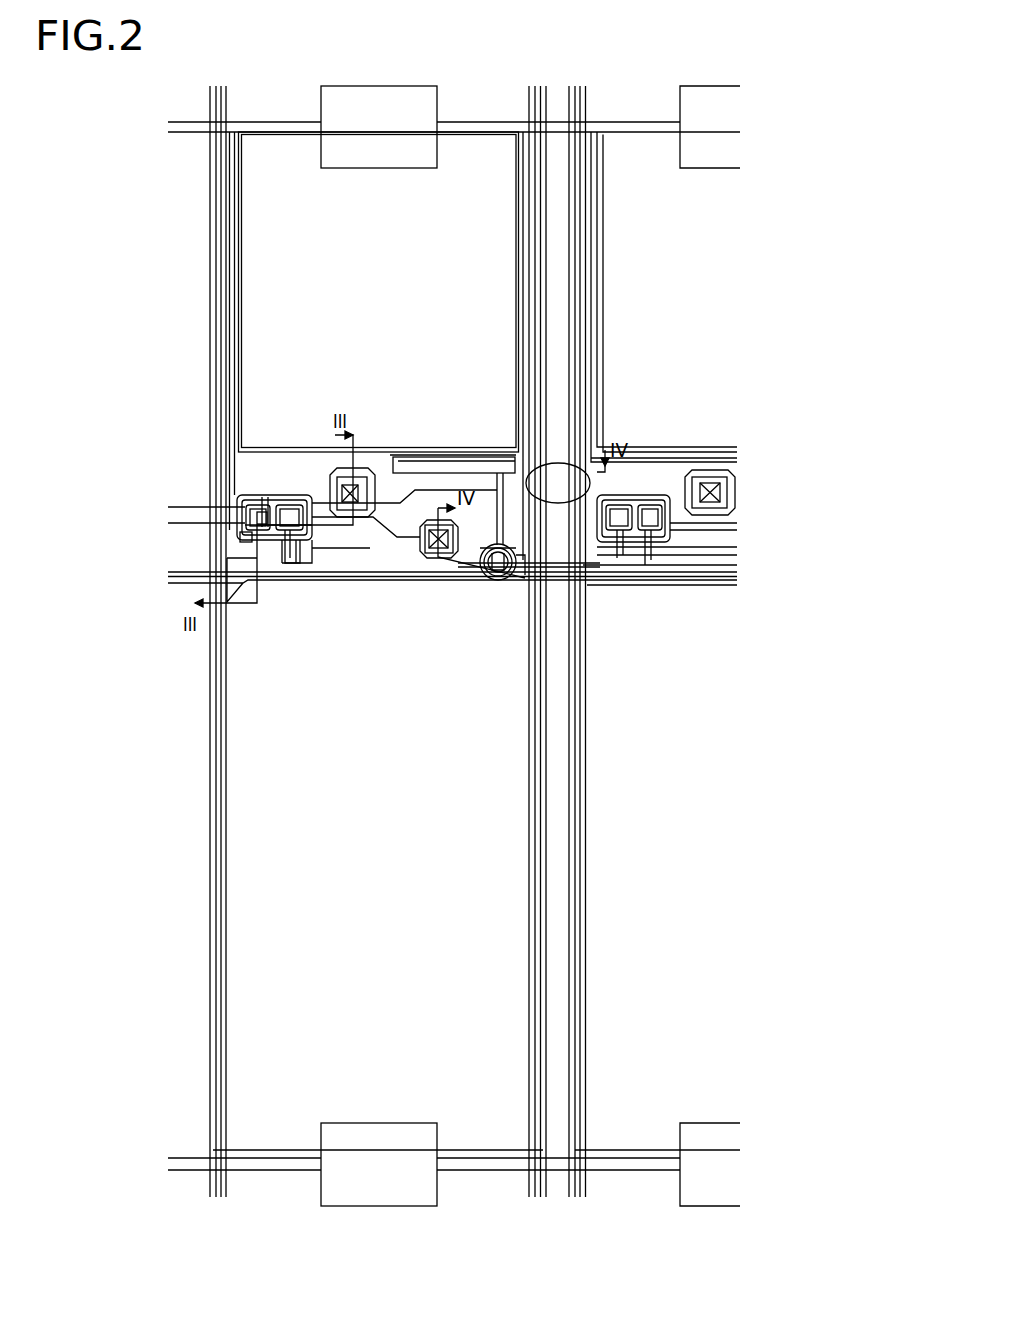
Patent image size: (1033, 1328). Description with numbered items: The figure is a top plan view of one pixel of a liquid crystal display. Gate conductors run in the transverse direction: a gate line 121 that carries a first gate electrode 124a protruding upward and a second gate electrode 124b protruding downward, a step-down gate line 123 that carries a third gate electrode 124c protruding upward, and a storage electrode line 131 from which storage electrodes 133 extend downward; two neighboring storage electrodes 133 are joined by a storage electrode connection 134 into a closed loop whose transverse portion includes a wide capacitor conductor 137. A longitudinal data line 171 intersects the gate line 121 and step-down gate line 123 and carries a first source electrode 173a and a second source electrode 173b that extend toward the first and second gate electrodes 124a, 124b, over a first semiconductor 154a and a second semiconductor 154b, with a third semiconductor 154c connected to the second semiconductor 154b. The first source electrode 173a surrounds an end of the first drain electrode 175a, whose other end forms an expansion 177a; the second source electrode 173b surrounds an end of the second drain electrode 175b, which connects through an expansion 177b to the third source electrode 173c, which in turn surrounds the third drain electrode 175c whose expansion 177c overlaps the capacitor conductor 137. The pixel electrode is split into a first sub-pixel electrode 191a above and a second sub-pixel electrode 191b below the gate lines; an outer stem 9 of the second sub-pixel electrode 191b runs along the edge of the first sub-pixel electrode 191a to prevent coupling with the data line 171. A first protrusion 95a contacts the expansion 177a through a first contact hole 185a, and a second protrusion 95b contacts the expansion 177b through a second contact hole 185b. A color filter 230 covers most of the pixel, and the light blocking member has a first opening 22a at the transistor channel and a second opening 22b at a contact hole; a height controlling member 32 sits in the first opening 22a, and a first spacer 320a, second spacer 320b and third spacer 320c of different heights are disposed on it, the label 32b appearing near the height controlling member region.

The storage electrode line 131 is at (187, 121).
The storage electrode 133 is at (242, 222).
The outer stem 9 is at (230, 172).
The data line 171 is at (577, 198).
The color filter 230 is at (548, 230).
The first sub-pixel electrode 191a is at (523, 372).
The second sub-pixel electrode 191b is at (545, 905).
The capacitor conductor 137 is at (515, 495).
The step-down gate line 123 is at (240, 585).
The gate line 121 is at (173, 507).
The first gate electrode 124a is at (250, 490).
The second gate electrode 124b is at (262, 497).
The third gate electrode 124c is at (645, 558).
The first semiconductor 154a is at (245, 528).
The second semiconductor 154b is at (297, 563).
The third semiconductor 154c is at (605, 578).
The first source electrode 173a is at (245, 517).
The second source electrode 173b is at (312, 555).
The third source electrode 173c is at (410, 553).
The first drain electrode 175a is at (252, 515).
The second drain electrode 175b is at (286, 563).
The third drain electrode 175c is at (670, 523).
The expansion 177a is at (283, 507).
The expansion 177b is at (506, 585).
The expansion 177c is at (647, 492).
The first contact hole 185a is at (290, 497).
The second contact hole 185b is at (470, 568).
The first spacer 320a is at (245, 541).
The second spacer 320b is at (512, 578).
The third spacer 320c is at (725, 480).
The first protrusion 95a is at (345, 478).
The second protrusion 95b is at (522, 580).
The first opening 22a is at (245, 508).
The second opening 22b is at (492, 583).
The height controlling member 32 is at (245, 525).
The channel region 32b is at (447, 562).
The storage electrode connection 134 is at (236, 430).